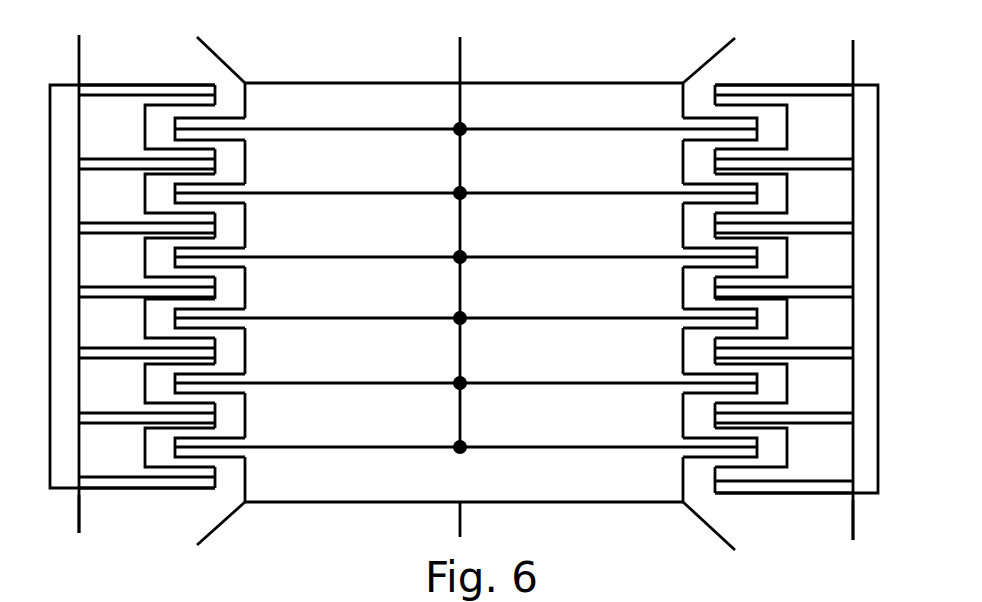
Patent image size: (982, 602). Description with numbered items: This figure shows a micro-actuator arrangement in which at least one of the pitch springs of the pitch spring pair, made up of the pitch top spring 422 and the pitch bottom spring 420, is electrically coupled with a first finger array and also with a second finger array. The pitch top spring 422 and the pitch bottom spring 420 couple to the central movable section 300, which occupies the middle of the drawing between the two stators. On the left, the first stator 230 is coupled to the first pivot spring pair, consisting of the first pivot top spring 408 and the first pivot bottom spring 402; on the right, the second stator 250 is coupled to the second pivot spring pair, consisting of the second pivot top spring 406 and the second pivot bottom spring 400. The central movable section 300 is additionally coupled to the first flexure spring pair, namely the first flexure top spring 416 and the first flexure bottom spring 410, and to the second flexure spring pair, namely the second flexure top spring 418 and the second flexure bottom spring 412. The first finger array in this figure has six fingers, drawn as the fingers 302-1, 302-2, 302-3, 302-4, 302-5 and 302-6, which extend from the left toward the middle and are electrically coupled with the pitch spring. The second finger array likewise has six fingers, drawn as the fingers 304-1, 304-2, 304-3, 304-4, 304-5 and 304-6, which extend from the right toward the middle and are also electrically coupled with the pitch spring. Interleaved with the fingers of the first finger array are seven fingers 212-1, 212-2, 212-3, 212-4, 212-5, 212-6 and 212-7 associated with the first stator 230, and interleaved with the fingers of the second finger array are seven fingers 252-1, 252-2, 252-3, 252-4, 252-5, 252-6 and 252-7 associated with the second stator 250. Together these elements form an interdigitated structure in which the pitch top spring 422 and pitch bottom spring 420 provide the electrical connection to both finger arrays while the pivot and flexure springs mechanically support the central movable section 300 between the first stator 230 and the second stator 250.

The first stator 230 is at (62, 472).
The second stator 250 is at (870, 477).
The central movable section 300 is at (587, 294).
The second pivot bottom spring 400 is at (853, 510).
The first pivot bottom spring 402 is at (79, 505).
The second pivot top spring 406 is at (850, 73).
The first pivot top spring 408 is at (79, 63).
The first flexure bottom spring 410 is at (237, 513).
The second flexure bottom spring 412 is at (697, 515).
The first flexure top spring 416 is at (220, 57).
The second flexure top spring 418 is at (700, 68).
The pitch bottom spring 420 is at (462, 513).
The pitch top spring 422 is at (460, 73).
The first electrode finger 212-1 is at (137, 97).
The first electrode finger 212-2 is at (127, 169).
The first electrode finger 212-3 is at (125, 223).
The first electrode finger 212-4 is at (132, 286).
The first electrode finger 212-5 is at (132, 347).
The first electrode finger 212-6 is at (132, 412).
The first electrode finger 212-7 is at (132, 476).
The second electrode finger 252-1 is at (812, 97).
The second electrode finger 252-2 is at (812, 171).
The second electrode finger 252-3 is at (790, 226).
The second electrode finger 252-4 is at (812, 235).
The second electrode finger 252-5 is at (812, 300).
The second electrode finger 252-6 is at (812, 360).
The second electrode finger 252-7 is at (812, 425).
The first finger array finger 302-1 is at (255, 131).
The first finger array finger 302-2 is at (255, 195).
The first finger array finger 302-3 is at (258, 257).
The first finger array finger 302-4 is at (255, 318).
The first finger array finger 302-5 is at (255, 383).
The first finger array finger 302-6 is at (255, 447).
The second finger array finger 304-1 is at (670, 133).
The second finger array finger 304-2 is at (668, 195).
The second finger array finger 304-3 is at (668, 257).
The second finger array finger 304-4 is at (668, 317).
The second finger array finger 304-5 is at (672, 382).
The second finger array finger 304-6 is at (672, 446).